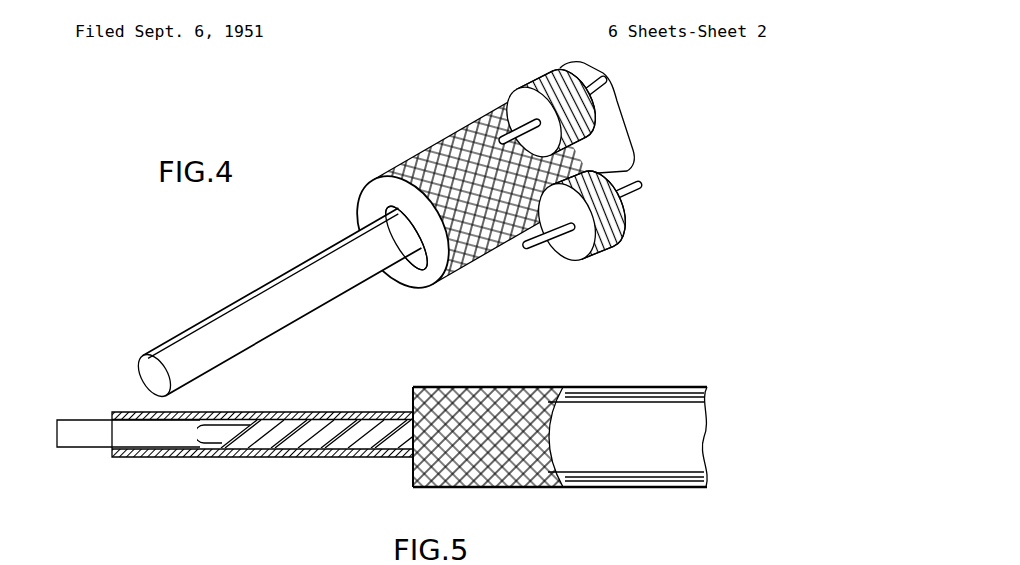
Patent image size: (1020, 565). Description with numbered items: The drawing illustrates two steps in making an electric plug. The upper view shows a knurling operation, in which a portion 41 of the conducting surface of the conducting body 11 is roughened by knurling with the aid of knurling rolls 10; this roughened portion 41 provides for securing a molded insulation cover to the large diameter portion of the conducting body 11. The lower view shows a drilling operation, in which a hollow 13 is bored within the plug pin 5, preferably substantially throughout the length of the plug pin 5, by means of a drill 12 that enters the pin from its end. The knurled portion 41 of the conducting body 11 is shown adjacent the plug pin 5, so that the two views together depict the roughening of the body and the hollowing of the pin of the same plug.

In FIG. 4, the plug pin 5 is at (277, 273).
In FIG. 5, the plug pin 5 is at (247, 413).
In FIG. 4, the knurling rolls 10 is at (536, 80).
In FIG. 4, the conducting body 11 is at (558, 68).
In FIG. 5, the conducting body 11 is at (613, 387).
In FIG. 5, the drill 12 is at (94, 448).
In FIG. 5, the hollow 13 is at (365, 425).
In FIG. 4, the roughened portion 41 is at (413, 157).
In FIG. 5, the roughened portion 41 is at (490, 387).